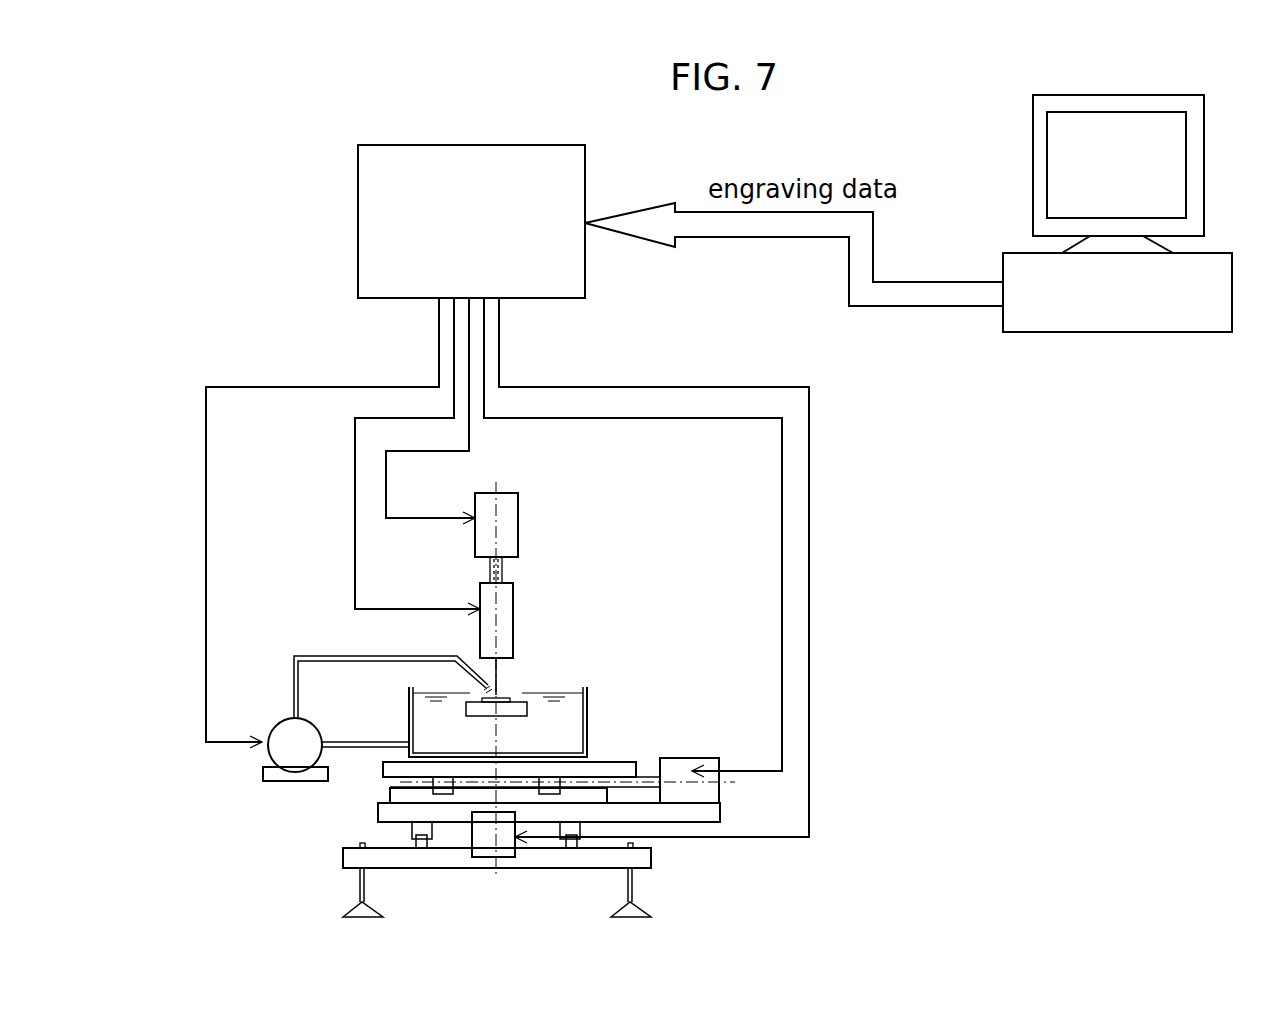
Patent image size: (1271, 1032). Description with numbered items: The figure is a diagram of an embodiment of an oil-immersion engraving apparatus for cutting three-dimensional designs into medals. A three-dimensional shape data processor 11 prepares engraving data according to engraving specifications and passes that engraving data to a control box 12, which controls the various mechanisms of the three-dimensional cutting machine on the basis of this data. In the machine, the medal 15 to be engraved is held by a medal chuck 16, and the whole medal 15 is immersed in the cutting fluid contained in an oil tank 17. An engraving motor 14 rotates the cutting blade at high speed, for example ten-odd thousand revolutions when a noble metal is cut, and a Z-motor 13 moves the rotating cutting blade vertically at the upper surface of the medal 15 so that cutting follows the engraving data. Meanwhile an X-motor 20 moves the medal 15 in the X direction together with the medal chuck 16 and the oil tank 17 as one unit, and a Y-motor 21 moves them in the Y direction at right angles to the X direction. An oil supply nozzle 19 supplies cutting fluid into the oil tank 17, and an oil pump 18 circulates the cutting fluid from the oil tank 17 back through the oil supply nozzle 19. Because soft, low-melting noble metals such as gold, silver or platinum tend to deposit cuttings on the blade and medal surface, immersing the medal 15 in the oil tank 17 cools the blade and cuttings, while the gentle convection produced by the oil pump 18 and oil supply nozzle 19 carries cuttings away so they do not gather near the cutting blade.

The three-dimensional shape data processor 11 is at (1200, 158).
The control box 12 is at (583, 185).
The Z-motor 13 is at (508, 500).
The engraving motor 14 is at (485, 583).
The medal 15 is at (499, 698).
The medal chuck 16 is at (519, 704).
The oil tank 17 is at (590, 712).
The oil pump 18 is at (297, 760).
The oil supply nozzle 19 is at (458, 658).
The X-motor 20 is at (484, 850).
The Y-motor 21 is at (681, 768).